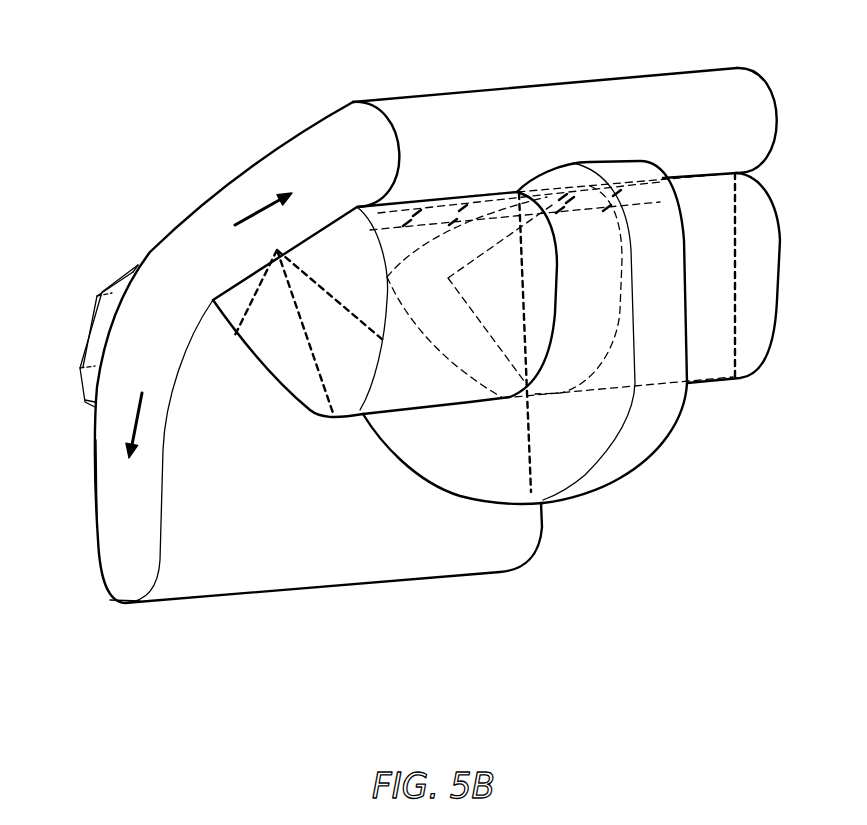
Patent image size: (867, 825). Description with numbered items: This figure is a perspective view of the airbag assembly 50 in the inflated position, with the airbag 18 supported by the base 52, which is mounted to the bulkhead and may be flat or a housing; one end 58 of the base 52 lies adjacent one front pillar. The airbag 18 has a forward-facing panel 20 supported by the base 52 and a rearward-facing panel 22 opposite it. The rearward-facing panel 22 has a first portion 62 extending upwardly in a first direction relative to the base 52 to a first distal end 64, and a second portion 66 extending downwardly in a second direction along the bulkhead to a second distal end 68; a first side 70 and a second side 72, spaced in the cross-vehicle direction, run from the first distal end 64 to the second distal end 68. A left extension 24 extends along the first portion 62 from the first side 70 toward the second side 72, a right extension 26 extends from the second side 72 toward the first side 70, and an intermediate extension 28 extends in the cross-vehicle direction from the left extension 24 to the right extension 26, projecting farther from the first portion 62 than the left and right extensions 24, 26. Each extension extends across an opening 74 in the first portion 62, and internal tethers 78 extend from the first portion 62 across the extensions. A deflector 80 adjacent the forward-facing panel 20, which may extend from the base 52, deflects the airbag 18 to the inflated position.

The airbag assembly 50 is at (170, 98).
The airbag 18 is at (325, 103).
The first side 70 is at (336, 176).
The first portion 62 is at (669, 63).
The second side 72 is at (778, 133).
The first distal end 64 is at (780, 100).
The forward-facing panel 20 is at (95, 435).
The rearward-facing panel 22 is at (278, 486).
The left extension 24 is at (285, 378).
The right extension 26 is at (782, 270).
The intermediate extension 28 is at (417, 470).
The base 52 is at (88, 296).
The end 58 is at (93, 325).
The deflector 80 is at (134, 258).
The second portion 66 is at (88, 522).
The second distal end 68 is at (120, 605).
The opening 74 is at (486, 222).
The internal tethers 78 is at (246, 306).